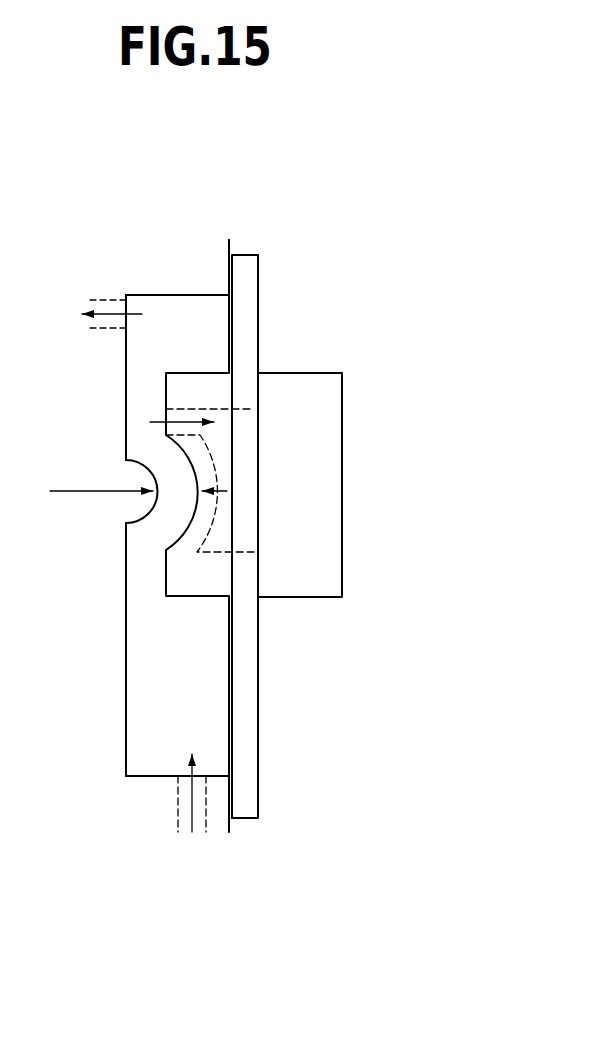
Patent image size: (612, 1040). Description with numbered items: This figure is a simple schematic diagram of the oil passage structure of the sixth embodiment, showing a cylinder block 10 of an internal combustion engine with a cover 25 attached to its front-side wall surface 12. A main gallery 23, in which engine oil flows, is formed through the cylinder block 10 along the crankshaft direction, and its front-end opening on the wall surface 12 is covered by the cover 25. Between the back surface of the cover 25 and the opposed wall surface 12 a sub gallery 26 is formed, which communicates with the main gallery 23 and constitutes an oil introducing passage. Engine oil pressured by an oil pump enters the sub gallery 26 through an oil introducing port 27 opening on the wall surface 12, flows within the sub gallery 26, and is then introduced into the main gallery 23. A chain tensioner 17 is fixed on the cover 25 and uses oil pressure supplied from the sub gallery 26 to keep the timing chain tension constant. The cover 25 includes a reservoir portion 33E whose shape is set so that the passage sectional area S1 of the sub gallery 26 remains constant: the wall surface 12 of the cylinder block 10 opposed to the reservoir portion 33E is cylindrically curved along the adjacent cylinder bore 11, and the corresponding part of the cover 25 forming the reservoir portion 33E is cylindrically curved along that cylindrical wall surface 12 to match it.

The cylinder block 10 is at (156, 288).
The cylinder bore 11 is at (140, 480).
The wall surface 12 is at (126, 568).
The chain tensioner 17 is at (351, 425).
The main gallery 23 is at (110, 305).
The cover 25 is at (247, 248).
The sub gallery 26 is at (145, 692).
The oil introducing port 27 is at (183, 810).
The reservoir portion 33E is at (237, 467).
The passage sectional area S1 is at (138, 478).